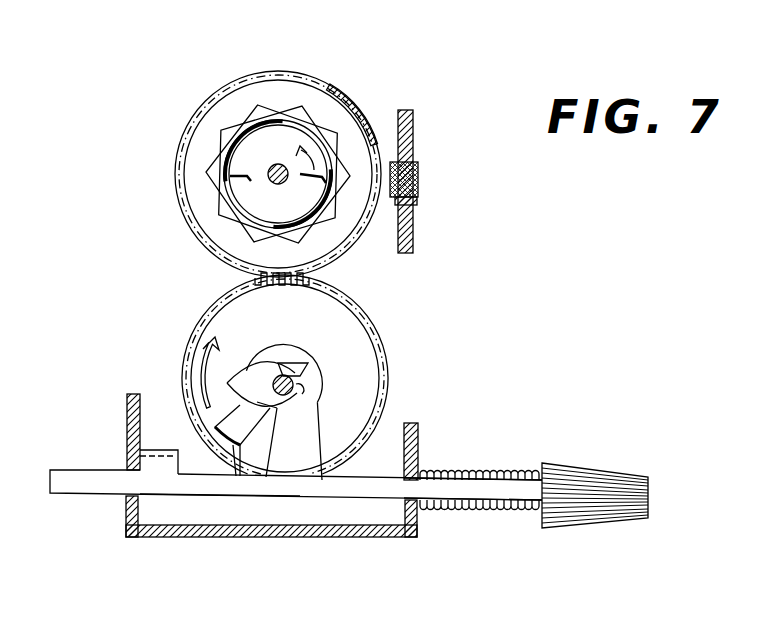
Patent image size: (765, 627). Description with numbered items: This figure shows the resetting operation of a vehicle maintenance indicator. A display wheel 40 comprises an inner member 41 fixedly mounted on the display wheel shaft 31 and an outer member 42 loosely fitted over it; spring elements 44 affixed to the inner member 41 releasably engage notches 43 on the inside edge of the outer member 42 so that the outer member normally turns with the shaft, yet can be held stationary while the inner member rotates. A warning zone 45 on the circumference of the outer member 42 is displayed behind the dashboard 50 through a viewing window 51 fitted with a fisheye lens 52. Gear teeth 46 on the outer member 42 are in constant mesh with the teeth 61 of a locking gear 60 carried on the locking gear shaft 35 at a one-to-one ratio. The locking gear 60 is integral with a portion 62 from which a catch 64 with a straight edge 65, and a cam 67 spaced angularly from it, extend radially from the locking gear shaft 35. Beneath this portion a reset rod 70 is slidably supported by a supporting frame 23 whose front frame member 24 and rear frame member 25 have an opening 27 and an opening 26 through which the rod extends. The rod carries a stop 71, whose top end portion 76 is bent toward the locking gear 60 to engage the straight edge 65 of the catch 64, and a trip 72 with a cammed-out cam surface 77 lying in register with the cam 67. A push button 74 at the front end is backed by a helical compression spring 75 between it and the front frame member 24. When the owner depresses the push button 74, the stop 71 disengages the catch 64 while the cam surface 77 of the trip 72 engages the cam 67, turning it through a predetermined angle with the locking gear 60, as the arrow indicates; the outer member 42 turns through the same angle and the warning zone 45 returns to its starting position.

The supporting frame 23 is at (298, 537).
The front frame member 24 is at (410, 423).
The rear frame member 25 is at (130, 408).
The opening 26 is at (130, 468).
The opening 27 is at (416, 532).
The display wheel shaft 31 is at (282, 165).
The locking gear shaft 35 is at (281, 395).
The display wheel 40 is at (232, 107).
The inner member 41 is at (227, 157).
The outer member 42 is at (207, 130).
The notches 43 is at (228, 177).
The spring elements 44 is at (271, 117).
The warning zone 45 is at (357, 103).
The gear teeth 46 is at (187, 212).
The dashboard 50 is at (413, 118).
The viewing window 51 is at (418, 200).
The fisheye lens 52 is at (418, 175).
The locking gear 60 is at (333, 308).
The teeth 61 is at (387, 344).
The portion 62 is at (283, 350).
The catch 64 is at (233, 430).
The straight edge 65 is at (248, 397).
The cam 67 is at (250, 377).
The reset rod 70 is at (359, 490).
The stop 71 is at (162, 470).
The trip 72 is at (305, 392).
The push button 74 is at (573, 520).
The helical compression spring 75 is at (497, 472).
The top end portion 76 is at (157, 448).
The cam surface 77 is at (306, 365).